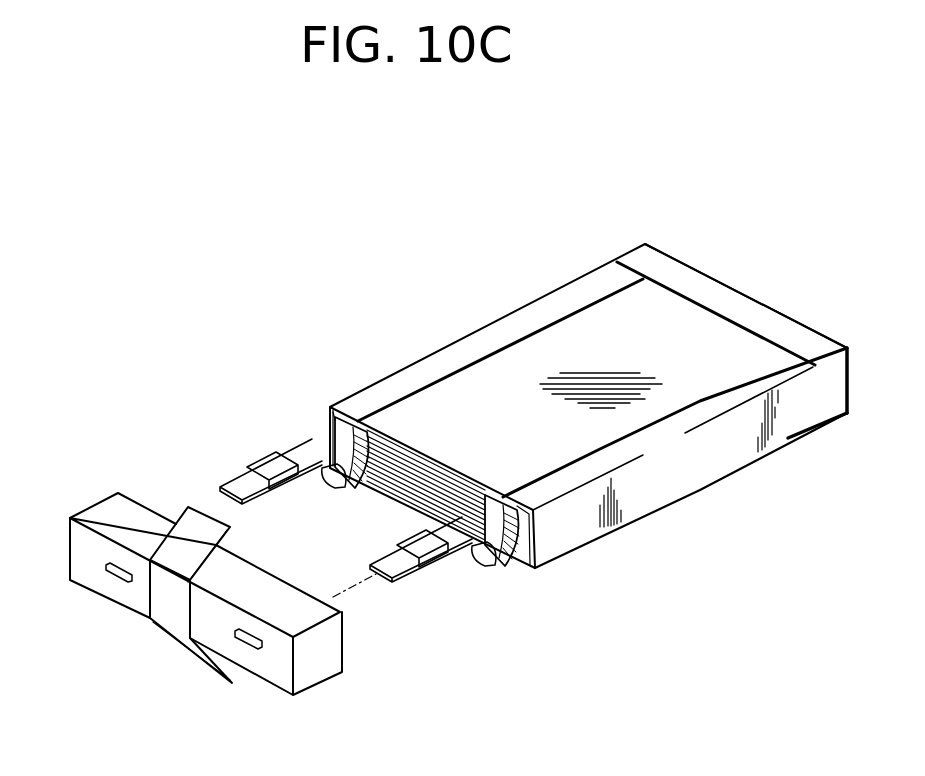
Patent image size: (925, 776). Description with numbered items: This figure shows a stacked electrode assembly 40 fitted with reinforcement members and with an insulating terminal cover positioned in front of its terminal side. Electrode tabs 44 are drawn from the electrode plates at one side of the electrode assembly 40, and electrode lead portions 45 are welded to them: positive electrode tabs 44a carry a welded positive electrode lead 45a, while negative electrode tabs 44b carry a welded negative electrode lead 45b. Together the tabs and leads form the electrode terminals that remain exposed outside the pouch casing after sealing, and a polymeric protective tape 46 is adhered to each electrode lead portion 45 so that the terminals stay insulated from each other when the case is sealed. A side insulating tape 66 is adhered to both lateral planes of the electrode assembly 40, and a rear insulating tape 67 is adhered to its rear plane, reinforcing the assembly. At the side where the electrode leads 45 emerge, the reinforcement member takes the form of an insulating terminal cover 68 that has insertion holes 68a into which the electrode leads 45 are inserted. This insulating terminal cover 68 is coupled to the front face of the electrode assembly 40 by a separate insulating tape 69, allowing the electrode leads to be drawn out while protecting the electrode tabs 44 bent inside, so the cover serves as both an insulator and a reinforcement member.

The electrode assembly 40 is at (590, 338).
The electrode tabs 44 is at (383, 439).
The positive electrode tabs 44a is at (344, 437).
The negative electrode tabs 44b is at (497, 513).
The electrode lead portions 45 is at (346, 513).
The positive electrode lead 45a is at (226, 498).
The negative electrode lead 45b is at (384, 560).
The polymeric protective tape 46 is at (272, 463).
The side insulating tape 66 is at (477, 342).
The rear insulating tape 67 is at (738, 315).
The insulating terminal cover 68 is at (202, 608).
The insertion holes 68a is at (117, 572).
The insulating tape 69 is at (170, 615).